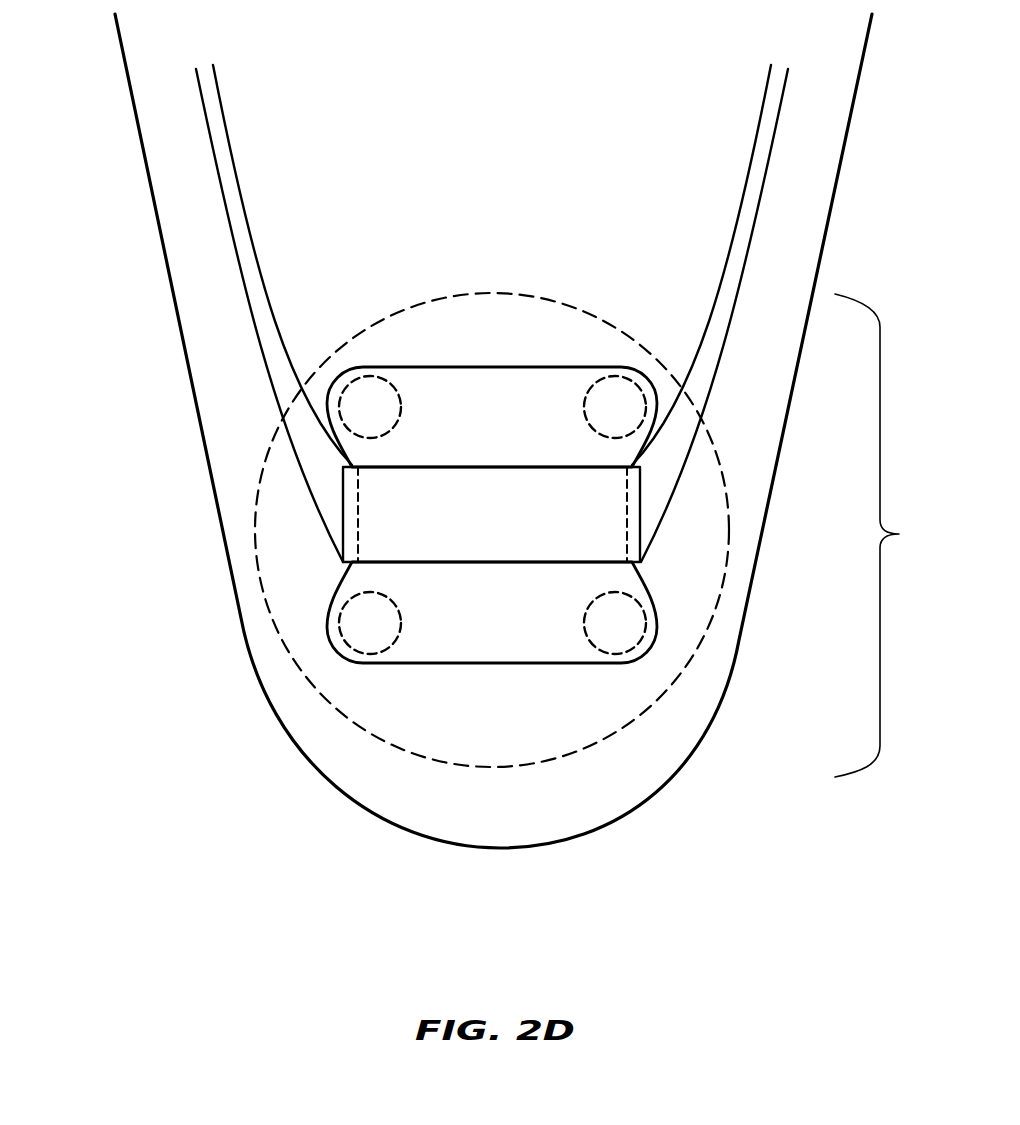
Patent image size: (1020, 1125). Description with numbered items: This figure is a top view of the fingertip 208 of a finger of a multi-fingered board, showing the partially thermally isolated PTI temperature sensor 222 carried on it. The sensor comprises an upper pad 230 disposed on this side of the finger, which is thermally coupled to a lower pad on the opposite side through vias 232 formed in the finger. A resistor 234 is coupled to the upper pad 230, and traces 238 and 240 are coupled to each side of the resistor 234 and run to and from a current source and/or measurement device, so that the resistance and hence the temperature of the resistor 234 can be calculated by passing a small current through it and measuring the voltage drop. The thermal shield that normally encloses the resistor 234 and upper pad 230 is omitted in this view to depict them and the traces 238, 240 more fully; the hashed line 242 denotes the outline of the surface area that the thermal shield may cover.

The fingertip 208 is at (168, 268).
The PTI temperature sensor 222 is at (895, 535).
The upper pad 230 is at (328, 640).
The vias 232 is at (583, 405).
The resistor 234 is at (518, 528).
The trace 238 is at (257, 243).
The trace 240 is at (725, 243).
The hashed line 242 is at (252, 530).